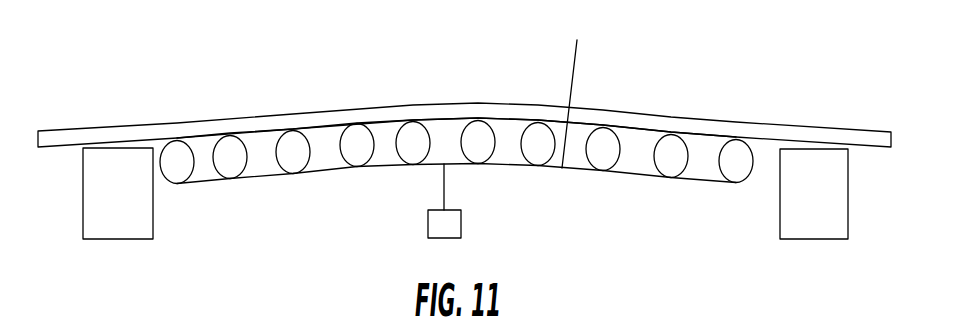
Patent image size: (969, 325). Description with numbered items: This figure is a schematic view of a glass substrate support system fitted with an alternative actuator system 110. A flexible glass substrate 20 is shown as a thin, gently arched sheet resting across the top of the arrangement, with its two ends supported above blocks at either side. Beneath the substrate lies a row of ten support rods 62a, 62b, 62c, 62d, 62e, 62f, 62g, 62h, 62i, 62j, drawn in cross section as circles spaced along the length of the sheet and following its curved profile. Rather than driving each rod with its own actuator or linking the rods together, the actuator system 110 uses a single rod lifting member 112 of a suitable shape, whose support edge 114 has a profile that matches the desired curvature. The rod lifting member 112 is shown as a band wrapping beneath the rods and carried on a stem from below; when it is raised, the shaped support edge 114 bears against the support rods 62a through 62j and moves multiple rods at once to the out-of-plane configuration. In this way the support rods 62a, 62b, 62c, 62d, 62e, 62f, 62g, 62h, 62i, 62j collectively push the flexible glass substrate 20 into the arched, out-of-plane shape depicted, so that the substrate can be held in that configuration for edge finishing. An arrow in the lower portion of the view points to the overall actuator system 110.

The actuator system 110 is at (538, 222).
The flexible glass substrate 20 is at (788, 126).
The rod lifting member 112 is at (633, 175).
The support edge 114 is at (577, 87).
The support rod 62a is at (176, 160).
The support rod 62b is at (230, 156).
The support rod 62c is at (293, 151).
The support rod 62d is at (357, 144).
The support rod 62e is at (413, 142).
The support rod 62f is at (478, 141).
The support rod 62g is at (538, 143).
The support rod 62h is at (607, 148).
The support rod 62i is at (675, 154).
The support rod 62j is at (735, 159).